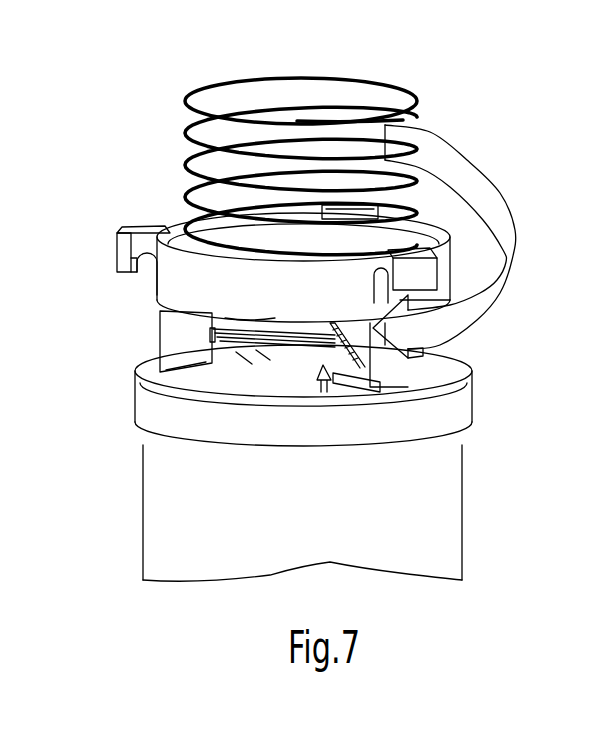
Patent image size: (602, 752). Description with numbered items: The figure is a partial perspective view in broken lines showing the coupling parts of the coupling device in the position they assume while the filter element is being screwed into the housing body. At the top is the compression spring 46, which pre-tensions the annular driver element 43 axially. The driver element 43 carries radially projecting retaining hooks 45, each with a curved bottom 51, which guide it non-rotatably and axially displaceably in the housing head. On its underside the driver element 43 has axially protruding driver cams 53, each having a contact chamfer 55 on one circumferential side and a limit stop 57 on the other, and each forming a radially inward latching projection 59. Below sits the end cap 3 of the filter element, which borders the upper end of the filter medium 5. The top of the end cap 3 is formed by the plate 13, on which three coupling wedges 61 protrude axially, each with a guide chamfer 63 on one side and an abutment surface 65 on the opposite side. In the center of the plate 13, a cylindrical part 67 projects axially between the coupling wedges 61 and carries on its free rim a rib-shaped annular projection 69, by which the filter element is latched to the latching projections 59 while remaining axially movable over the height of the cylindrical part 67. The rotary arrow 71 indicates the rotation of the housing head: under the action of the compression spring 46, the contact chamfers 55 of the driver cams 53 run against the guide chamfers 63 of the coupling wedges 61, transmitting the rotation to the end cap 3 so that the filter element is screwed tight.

The end cap 3 is at (452, 407).
The filter medium 5 is at (450, 513).
The plate 13 is at (437, 370).
The driver element 43 is at (180, 283).
The retaining hooks 45 is at (128, 230).
The compression spring 46 is at (182, 106).
The curved bottom 51 is at (140, 268).
The driver cam 53 is at (158, 345).
The contact chamfer 55 is at (340, 350).
The limit stop 57 is at (182, 353).
The latching projection 59 is at (244, 330).
The coupling wedges 61 is at (350, 390).
The guide chamfer 63 is at (332, 378).
The abutment surface 65 is at (313, 382).
The cylindrical part 67 is at (245, 360).
The annular projection 69 is at (262, 356).
The rotary arrow 71 is at (452, 150).